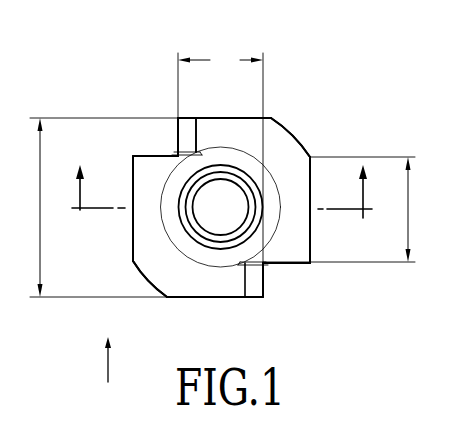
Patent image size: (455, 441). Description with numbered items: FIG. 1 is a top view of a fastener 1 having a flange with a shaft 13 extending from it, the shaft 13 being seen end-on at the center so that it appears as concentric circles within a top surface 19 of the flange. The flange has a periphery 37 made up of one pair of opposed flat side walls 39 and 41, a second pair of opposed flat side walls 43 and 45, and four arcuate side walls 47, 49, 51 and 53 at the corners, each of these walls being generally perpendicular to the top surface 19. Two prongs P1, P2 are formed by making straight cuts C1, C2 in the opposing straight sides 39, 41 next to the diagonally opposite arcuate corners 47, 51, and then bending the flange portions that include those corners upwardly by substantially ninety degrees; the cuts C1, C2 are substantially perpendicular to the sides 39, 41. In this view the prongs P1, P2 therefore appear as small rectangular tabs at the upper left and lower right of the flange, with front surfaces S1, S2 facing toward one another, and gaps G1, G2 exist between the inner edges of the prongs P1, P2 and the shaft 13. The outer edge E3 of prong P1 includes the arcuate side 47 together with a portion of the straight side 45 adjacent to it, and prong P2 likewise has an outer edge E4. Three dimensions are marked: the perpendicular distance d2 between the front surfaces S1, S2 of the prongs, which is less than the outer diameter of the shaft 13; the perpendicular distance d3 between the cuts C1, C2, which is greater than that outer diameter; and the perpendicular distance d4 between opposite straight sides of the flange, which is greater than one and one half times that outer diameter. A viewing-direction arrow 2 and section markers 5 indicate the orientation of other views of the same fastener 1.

The cutting insert 1 is at (346, 35).
The viewing direction arrow 2 is at (108, 378).
The section line 5 is at (222, 191).
The shaft 13 is at (161, 208).
The top surface 19 is at (176, 282).
The periphery 37 is at (275, 118).
The flat side wall 39 is at (312, 183).
The flat side wall 41 is at (132, 252).
The flat side wall 43 is at (197, 117).
The flat side wall 45 is at (193, 298).
The arcuate side wall 47 is at (332, 308).
The arcuate side wall 49 is at (302, 137).
The arcuate side wall 51 is at (124, 83).
The arcuate side wall 53 is at (133, 268).
The prong P1 is at (332, 308).
The prong P2 is at (124, 83).
The outer edge E3 is at (258, 290).
The outer edge E4 is at (204, 117).
The gap G1 is at (264, 267).
The gap G2 is at (180, 140).
The front surface S1 is at (265, 271).
The front surface S2 is at (178, 134).
The cut C1 is at (281, 257).
The cut C2 is at (175, 153).
The perpendicular distance between front surfaces d2 is at (220, 145).
The perpendicular distance between cuts d3 is at (352, 209).
The perpendicular distance between opposite straight sides d4 is at (92, 207).